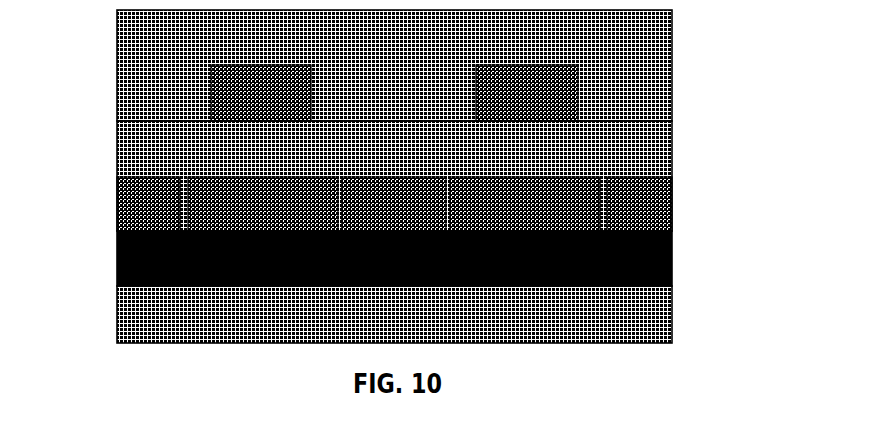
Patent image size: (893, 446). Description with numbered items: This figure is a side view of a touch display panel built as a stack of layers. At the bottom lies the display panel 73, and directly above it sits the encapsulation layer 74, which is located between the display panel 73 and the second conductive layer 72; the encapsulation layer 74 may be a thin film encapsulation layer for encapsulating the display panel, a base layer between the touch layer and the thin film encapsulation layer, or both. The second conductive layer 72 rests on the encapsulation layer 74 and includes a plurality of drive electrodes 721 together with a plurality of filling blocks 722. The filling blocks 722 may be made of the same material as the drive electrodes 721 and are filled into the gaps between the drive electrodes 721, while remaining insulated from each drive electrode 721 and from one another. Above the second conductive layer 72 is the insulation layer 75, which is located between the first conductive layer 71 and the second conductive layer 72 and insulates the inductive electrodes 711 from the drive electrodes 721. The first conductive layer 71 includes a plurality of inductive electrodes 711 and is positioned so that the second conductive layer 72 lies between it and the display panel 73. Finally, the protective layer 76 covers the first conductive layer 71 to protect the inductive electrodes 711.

The first conductive layer 71 is at (493, 93).
The inductive electrodes 711 is at (394, 93).
The second conductive layer 72 is at (446, 204).
The drive electrodes 721 is at (394, 204).
The filling blocks 722 is at (394, 204).
The display panel 73 is at (643, 315).
The encapsulation layer 74 is at (145, 258).
The insulation layer 75 is at (145, 148).
The protective layer 76 is at (145, 37).